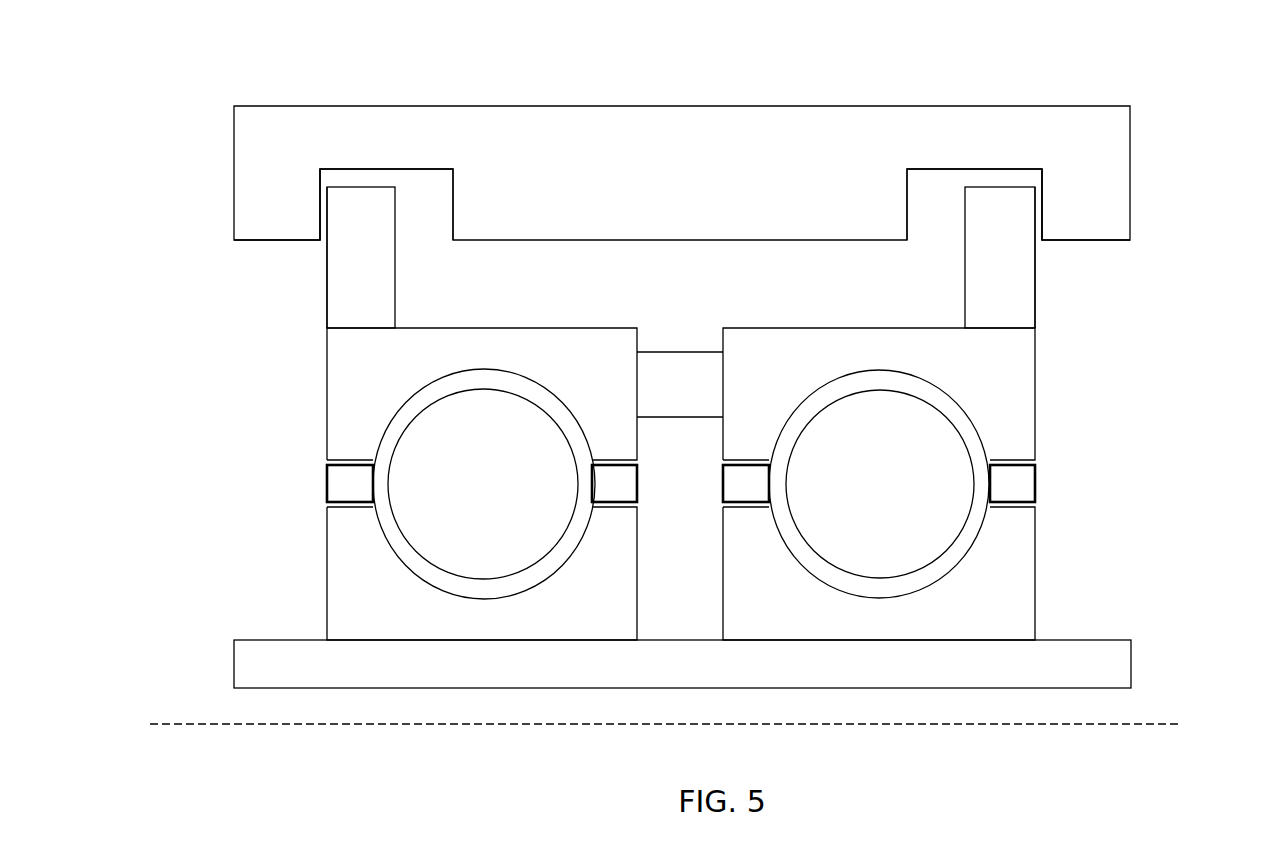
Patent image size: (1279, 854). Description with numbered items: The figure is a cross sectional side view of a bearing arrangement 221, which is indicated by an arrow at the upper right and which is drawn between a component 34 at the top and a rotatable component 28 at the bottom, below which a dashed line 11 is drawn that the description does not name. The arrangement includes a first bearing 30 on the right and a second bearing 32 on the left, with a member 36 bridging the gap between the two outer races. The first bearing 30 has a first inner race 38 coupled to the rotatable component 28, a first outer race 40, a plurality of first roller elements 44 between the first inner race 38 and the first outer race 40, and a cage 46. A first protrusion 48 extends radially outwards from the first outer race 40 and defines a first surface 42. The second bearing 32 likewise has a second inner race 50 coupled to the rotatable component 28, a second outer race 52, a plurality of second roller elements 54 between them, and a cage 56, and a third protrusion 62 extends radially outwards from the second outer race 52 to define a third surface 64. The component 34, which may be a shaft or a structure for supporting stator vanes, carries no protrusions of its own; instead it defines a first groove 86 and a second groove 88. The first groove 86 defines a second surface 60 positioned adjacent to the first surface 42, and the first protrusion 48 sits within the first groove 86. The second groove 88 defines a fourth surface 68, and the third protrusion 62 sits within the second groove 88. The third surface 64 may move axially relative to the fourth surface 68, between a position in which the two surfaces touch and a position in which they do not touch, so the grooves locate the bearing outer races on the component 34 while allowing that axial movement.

The engine axis / centerline 11 is at (364, 725).
The rotatable component 28 is at (1120, 670).
The first bearing 30 is at (1050, 482).
The second bearing 32 is at (305, 484).
The component 34 is at (733, 106).
The member 36 is at (667, 350).
The first inner race 38 is at (1028, 580).
The first outer race 40 is at (1028, 383).
The first surface 42 is at (1032, 275).
The first roller elements 44 is at (863, 497).
The cage 46 is at (740, 486).
The first protrusion 48 is at (975, 285).
The second inner race 50 is at (338, 600).
The second outer race 52 is at (338, 383).
The second roller elements 54 is at (466, 497).
The cage 56 is at (627, 484).
The second surface 60 is at (1045, 205).
The third protrusion 62 is at (373, 284).
The third surface 64 is at (328, 278).
The fourth surface 68 is at (318, 207).
The first groove 86 is at (940, 206).
The second groove 88 is at (427, 206).
The bearing arrangement 221 is at (1222, 132).